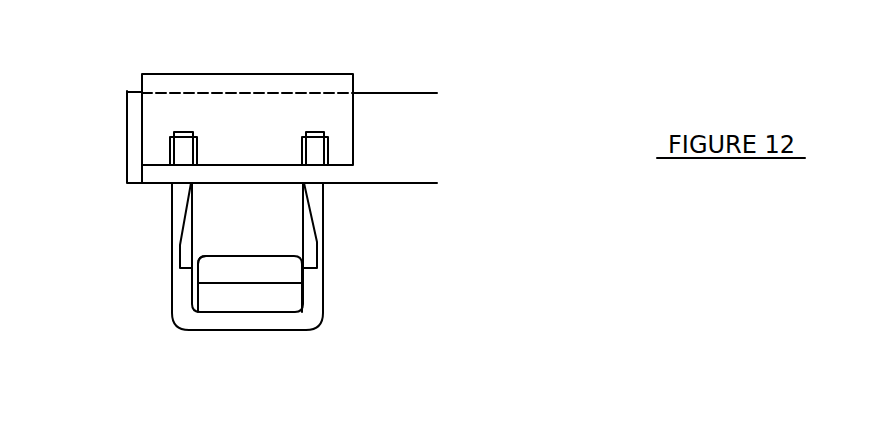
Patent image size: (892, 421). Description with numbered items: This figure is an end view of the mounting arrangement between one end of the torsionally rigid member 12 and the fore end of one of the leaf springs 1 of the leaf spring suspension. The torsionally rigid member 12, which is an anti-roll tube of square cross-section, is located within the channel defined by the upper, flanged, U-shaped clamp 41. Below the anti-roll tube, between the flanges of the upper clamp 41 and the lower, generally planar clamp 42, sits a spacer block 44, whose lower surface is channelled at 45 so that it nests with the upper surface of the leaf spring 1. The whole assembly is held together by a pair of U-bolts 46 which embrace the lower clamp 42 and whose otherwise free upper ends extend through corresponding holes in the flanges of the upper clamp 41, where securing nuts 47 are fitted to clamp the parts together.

The leaf spring 1 is at (273, 270).
The torsionally rigid member 12 is at (408, 105).
The upper U-shaped clamp 41 is at (255, 83).
The lower clamp 42 is at (230, 300).
The spacer block 44 is at (260, 231).
The channel 45 is at (217, 262).
The U-bolts 46 is at (315, 300).
The securing nuts 47 is at (182, 153).